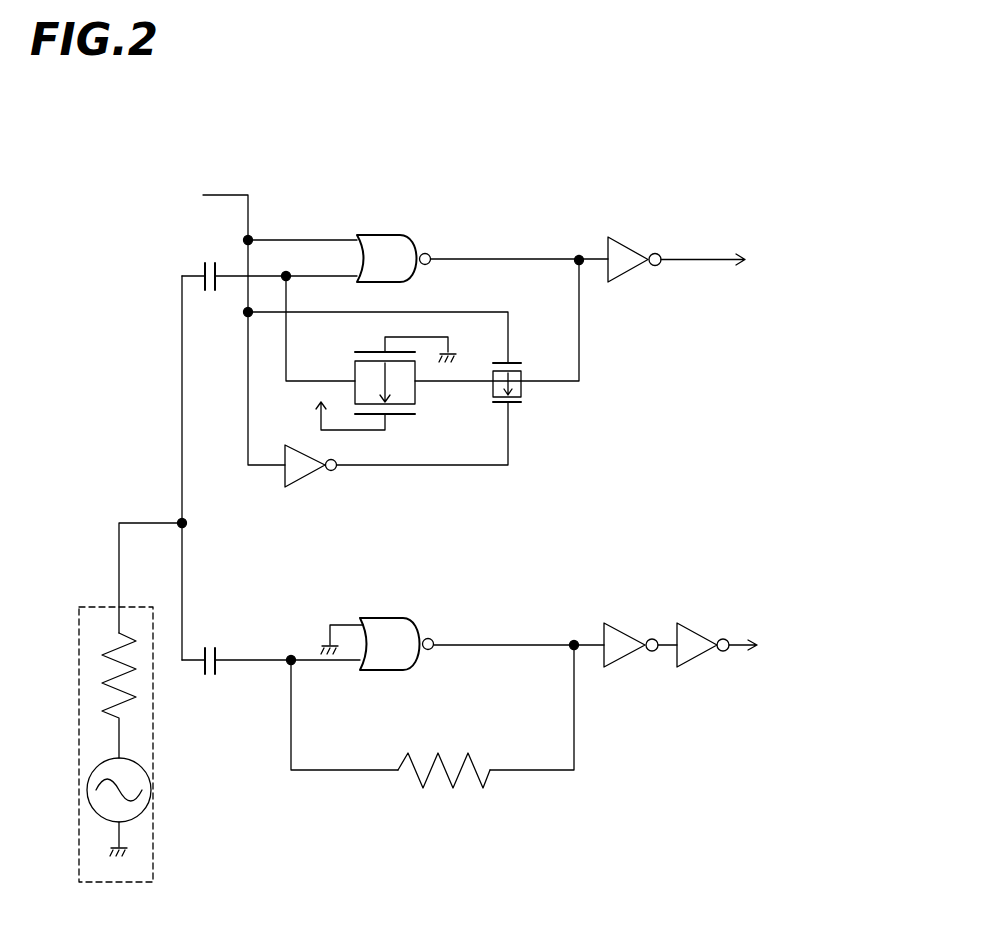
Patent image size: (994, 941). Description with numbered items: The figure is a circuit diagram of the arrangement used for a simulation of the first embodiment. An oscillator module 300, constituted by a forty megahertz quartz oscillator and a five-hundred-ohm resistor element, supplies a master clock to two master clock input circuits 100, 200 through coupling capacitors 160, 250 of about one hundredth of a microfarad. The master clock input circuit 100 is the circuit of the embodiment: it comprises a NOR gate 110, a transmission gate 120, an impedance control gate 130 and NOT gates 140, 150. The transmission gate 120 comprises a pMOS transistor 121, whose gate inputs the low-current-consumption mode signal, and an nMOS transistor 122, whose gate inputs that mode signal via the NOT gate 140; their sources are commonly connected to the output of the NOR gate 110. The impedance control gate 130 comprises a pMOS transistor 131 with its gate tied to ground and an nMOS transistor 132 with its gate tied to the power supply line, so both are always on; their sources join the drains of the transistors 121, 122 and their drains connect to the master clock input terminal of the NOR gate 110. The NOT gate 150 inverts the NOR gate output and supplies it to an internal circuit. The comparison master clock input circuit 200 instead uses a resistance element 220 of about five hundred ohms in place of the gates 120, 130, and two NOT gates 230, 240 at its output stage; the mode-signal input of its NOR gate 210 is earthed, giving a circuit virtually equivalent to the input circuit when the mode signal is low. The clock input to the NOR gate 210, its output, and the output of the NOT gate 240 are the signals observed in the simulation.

The master clock input circuit 100 is at (682, 154).
The NOR gate 110 is at (392, 233).
The transmission gate 120 is at (596, 410).
The pMOS transistor 121 is at (522, 378).
The nMOS transistor 122 is at (522, 388).
The impedance control gate 130 is at (505, 490).
The pMOS transistor 131 is at (416, 368).
The nMOS transistor 132 is at (416, 382).
The NOT gate 140 is at (307, 483).
The NOT gate 150 is at (632, 240).
The coupling capacitor 160 is at (211, 293).
The master clock input circuit 200 is at (615, 818).
The NOR gate 210 is at (404, 620).
The resistance element 220 is at (447, 790).
The NOT gate 230 is at (631, 625).
The NOT gate 240 is at (703, 625).
The coupling capacitor 250 is at (211, 678).
The oscillator module 300 is at (155, 836).